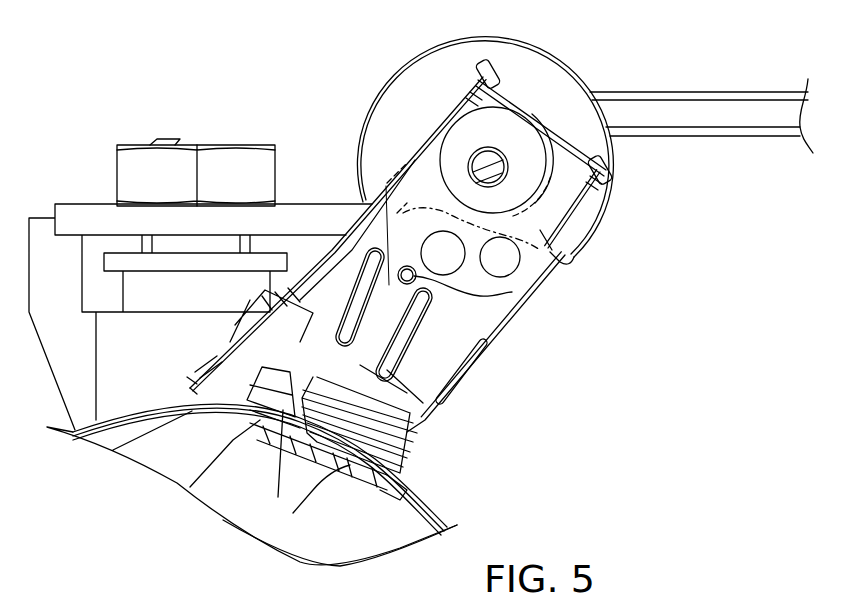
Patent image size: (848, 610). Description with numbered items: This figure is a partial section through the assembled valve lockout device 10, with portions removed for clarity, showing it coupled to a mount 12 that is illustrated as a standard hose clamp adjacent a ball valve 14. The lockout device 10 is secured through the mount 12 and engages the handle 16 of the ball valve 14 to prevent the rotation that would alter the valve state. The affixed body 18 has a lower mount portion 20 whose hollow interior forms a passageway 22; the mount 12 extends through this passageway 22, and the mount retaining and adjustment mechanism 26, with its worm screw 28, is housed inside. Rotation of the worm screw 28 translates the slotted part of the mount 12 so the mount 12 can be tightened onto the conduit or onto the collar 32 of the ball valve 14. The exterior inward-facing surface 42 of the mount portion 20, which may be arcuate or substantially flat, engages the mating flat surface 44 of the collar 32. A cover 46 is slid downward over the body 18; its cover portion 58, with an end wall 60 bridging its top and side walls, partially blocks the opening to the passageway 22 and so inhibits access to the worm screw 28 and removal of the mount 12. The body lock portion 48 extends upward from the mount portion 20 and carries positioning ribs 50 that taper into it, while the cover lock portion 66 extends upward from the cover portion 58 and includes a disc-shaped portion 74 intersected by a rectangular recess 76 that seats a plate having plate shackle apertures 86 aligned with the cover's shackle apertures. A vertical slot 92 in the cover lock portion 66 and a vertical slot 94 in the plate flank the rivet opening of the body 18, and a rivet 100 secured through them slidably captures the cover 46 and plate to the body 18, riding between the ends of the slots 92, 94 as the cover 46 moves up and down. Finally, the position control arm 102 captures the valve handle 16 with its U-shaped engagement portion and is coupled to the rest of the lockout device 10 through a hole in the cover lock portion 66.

The lockout device 10 is at (372, 42).
The mount 12 is at (116, 410).
The ball valve 14 is at (112, 164).
The handle 16 is at (694, 92).
The affixed body 18 is at (370, 496).
The lower mount portion 20 is at (300, 336).
The passageway 22 is at (292, 360).
The mount retaining and adjustment mechanism 26 is at (236, 398).
The worm screw 28 is at (286, 410).
The collar 32 is at (328, 560).
The exterior inward-facing surface 42 is at (302, 440).
The mating flat surface 44 is at (400, 502).
The cover 46 is at (374, 94).
The body lock portion 48 is at (482, 372).
The positioning ribs 50 is at (340, 292).
The cover portion 58 is at (193, 367).
The end wall 60 is at (187, 377).
The cover lock portion 66 is at (344, 226).
The disc-shaped portion 74 is at (462, 38).
The rectangular recess 76 is at (517, 98).
The plate shackle apertures 86 is at (505, 279).
The vertical slot 92 is at (384, 182).
The vertical slot 94 is at (384, 182).
The rivet 100 is at (414, 280).
The position control arm 102 is at (505, 152).